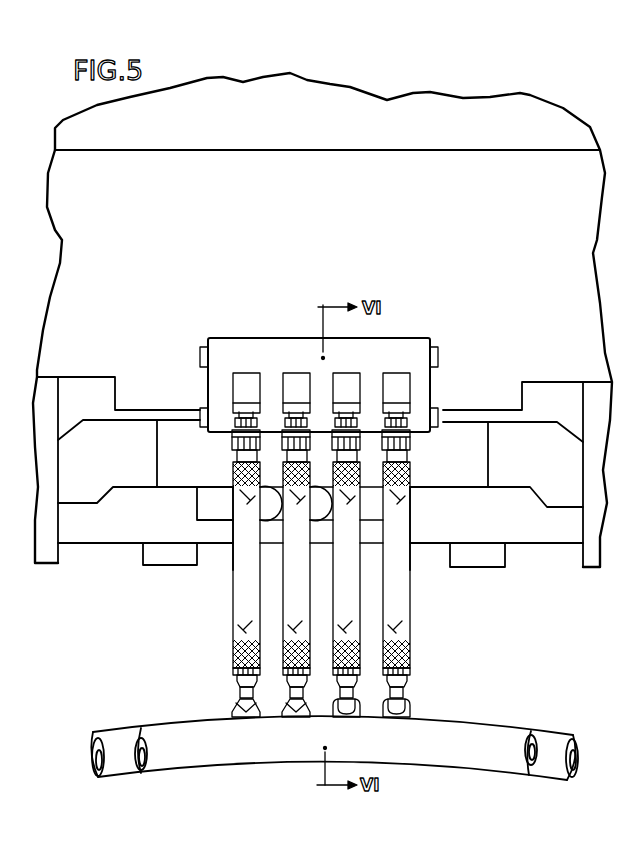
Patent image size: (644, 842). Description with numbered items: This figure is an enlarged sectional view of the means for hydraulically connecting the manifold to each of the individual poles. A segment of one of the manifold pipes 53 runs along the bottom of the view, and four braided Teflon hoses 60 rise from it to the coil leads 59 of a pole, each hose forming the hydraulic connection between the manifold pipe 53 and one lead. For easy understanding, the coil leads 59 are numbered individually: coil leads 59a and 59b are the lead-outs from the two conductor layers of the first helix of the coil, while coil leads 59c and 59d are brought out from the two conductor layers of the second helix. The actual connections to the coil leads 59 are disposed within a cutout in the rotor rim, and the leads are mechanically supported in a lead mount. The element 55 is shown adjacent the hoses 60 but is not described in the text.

The manifold pipe 53 is at (467, 728).
The flexible hose conduits 55 is at (221, 618).
The coil leads 59 is at (250, 338).
The coil lead 59a is at (252, 358).
The coil lead 59b is at (307, 358).
The coil lead 59c is at (338, 372).
The coil lead 59d is at (389, 372).
The braided Teflon hose 60 is at (403, 593).